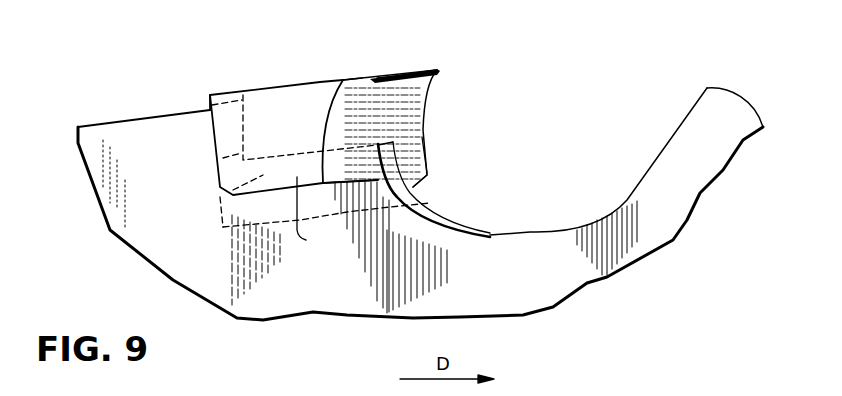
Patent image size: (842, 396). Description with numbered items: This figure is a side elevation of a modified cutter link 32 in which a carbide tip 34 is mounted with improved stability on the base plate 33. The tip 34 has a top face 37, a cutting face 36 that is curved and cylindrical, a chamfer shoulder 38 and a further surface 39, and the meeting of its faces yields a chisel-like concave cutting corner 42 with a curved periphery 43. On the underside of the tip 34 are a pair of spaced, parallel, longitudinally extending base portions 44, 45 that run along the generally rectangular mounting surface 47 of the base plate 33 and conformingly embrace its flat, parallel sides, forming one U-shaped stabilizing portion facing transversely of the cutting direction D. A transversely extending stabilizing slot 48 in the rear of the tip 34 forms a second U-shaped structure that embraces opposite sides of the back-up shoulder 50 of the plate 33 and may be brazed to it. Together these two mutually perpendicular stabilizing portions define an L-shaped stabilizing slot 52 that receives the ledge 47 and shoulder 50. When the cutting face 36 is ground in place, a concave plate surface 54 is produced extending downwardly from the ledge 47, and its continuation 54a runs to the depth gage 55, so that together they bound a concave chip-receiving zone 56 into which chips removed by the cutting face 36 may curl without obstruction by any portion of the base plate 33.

The modified cutter link 32 is at (541, 133).
The base plate 33 is at (460, 288).
The carbide tip 34 is at (361, 77).
The cutting face 36 is at (362, 136).
The top face 37 is at (292, 85).
The chamfer shoulder 38 is at (424, 183).
The surface 39 is at (430, 203).
The concave cutting corner 42 is at (423, 84).
The curved periphery 43 is at (440, 70).
The base portion 44 is at (311, 213).
The base portion 45 is at (407, 165).
The mounting surface 47 is at (380, 179).
The stabilizing slot 48 is at (208, 101).
The back-up shoulder 50 is at (222, 162).
The L-shaped stabilizing slot 52 is at (224, 208).
The concave plate surface 54 is at (388, 198).
The plate surface continuation 54a is at (623, 217).
The depth gage 55 is at (710, 126).
The chip-receiving zone 56 is at (565, 158).